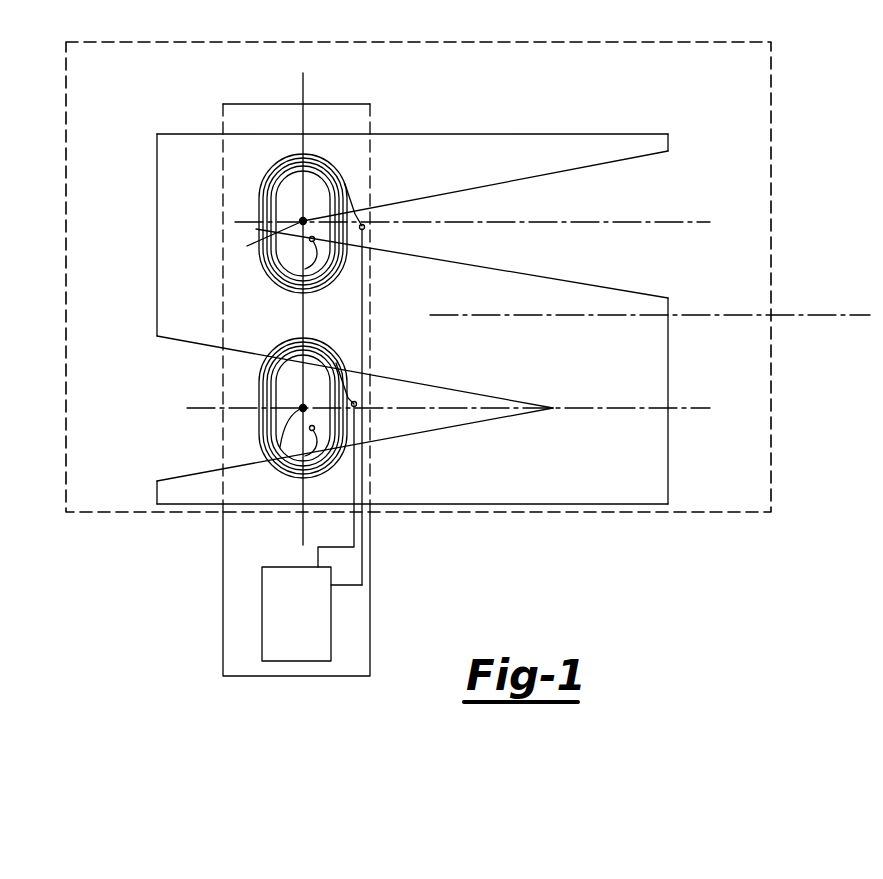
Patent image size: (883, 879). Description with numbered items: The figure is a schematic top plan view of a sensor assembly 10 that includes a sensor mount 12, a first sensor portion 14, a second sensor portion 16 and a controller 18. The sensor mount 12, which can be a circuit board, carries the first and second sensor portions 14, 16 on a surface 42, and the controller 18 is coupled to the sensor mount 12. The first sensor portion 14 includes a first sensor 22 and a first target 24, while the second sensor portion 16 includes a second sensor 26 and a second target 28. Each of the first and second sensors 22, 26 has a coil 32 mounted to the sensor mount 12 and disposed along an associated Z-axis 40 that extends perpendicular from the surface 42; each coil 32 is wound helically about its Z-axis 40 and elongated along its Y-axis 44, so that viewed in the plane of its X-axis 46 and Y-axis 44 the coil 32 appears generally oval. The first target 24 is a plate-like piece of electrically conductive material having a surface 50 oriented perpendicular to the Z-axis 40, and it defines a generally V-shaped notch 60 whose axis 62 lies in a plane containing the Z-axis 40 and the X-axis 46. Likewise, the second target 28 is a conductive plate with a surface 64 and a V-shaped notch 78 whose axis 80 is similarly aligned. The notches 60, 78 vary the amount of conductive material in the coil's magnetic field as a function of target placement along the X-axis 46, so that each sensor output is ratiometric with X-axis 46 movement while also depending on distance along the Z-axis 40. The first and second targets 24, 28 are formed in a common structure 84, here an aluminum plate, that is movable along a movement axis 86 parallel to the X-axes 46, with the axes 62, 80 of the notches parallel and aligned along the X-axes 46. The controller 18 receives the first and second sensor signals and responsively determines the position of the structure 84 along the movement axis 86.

The sensor assembly 10 is at (604, 600).
The sensor mount 12 is at (238, 553).
The first sensor portion 14 is at (221, 93).
The second sensor portion 16 is at (150, 352).
The controller 18 is at (318, 620).
The first sensor 22 is at (254, 174).
The first target 24 is at (170, 146).
The second sensor 26 is at (250, 438).
The second target 28 is at (256, 340).
The coil 32 is at (347, 182).
The Z-axis 40 is at (247, 246).
The surface 42 is at (238, 622).
The Y-axis 44 is at (303, 89).
The X-axis 46 is at (452, 319).
The surface 50 is at (577, 143).
The V-shaped notch 60 is at (626, 268).
The axis 62 is at (685, 222).
The surface 64 is at (546, 490).
The V-shaped notch 78 is at (180, 462).
The axis 80 is at (683, 407).
The structure 84 is at (755, 99).
The movement axis 86 is at (830, 313).